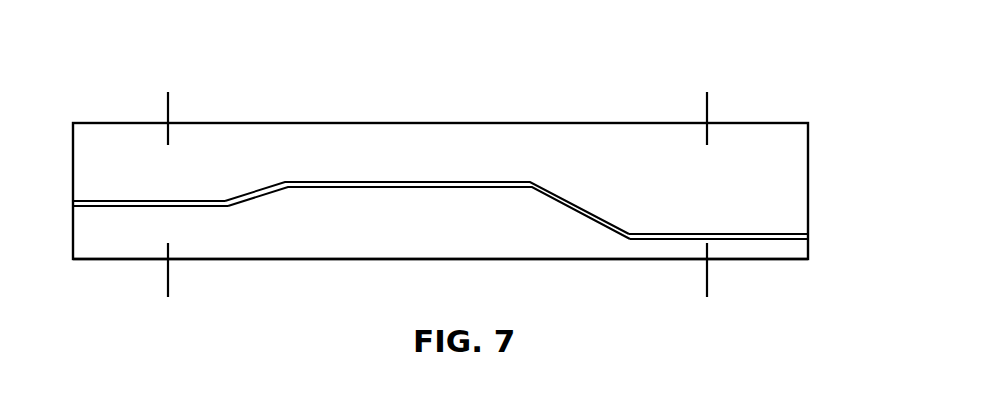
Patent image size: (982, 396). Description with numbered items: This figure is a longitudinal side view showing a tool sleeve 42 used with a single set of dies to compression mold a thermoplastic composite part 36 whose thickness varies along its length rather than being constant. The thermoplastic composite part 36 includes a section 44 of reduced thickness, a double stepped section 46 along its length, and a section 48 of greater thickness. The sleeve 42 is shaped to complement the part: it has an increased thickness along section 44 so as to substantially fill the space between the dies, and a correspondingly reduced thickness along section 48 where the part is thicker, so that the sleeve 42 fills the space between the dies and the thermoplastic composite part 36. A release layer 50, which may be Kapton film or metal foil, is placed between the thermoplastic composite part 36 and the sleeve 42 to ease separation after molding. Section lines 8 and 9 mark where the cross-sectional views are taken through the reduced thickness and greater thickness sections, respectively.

The thermoplastic composite part 36 is at (110, 138).
The tool sleeve 42 is at (105, 238).
The section of reduced thickness 44 is at (77, 193).
The double stepped section 46 is at (625, 180).
The section of greater thickness 48 is at (635, 223).
The release layer 50 is at (812, 232).
The section line 8- 8 is at (157, 101).
The section line 9- 9 is at (695, 101).